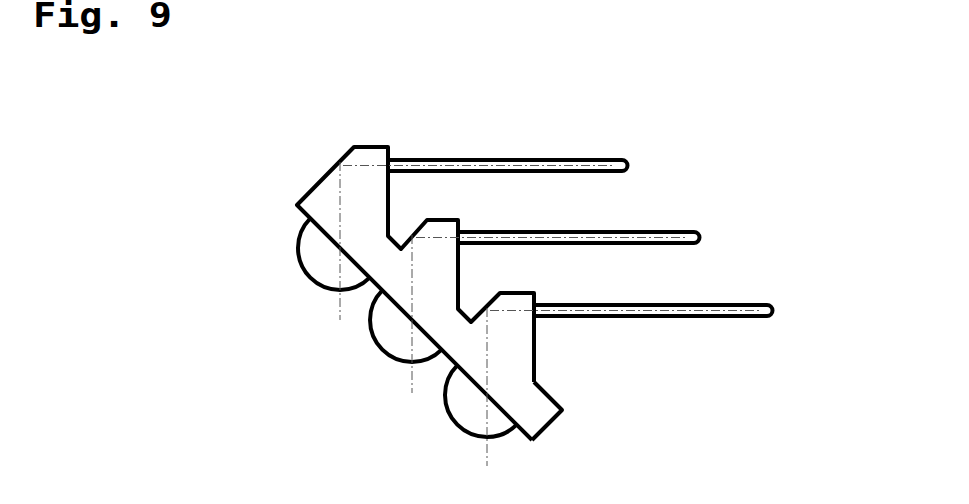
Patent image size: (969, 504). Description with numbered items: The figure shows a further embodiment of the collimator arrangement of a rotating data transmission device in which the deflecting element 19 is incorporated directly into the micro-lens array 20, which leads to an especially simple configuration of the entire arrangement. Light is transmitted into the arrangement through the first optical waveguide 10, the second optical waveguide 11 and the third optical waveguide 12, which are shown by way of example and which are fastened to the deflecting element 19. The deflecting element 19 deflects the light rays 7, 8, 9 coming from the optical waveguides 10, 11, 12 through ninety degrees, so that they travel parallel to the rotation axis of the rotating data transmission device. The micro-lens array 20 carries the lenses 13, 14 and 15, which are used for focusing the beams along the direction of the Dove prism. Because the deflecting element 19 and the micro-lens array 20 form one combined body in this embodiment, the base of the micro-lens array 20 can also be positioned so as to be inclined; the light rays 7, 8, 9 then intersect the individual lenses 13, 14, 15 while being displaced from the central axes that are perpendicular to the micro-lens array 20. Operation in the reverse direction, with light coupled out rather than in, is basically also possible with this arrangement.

The deflecting element 19 is at (328, 183).
The micro-lens array 20 is at (535, 408).
The first optical waveguide 10 is at (637, 155).
The second optical waveguide 11 is at (718, 235).
The third optical waveguide 12 is at (790, 308).
The lens 15 is at (298, 257).
The lens 14 is at (371, 339).
The lens 13 is at (430, 410).
The light ray 9 is at (338, 307).
The light ray 8 is at (412, 391).
The light ray 7 is at (472, 461).